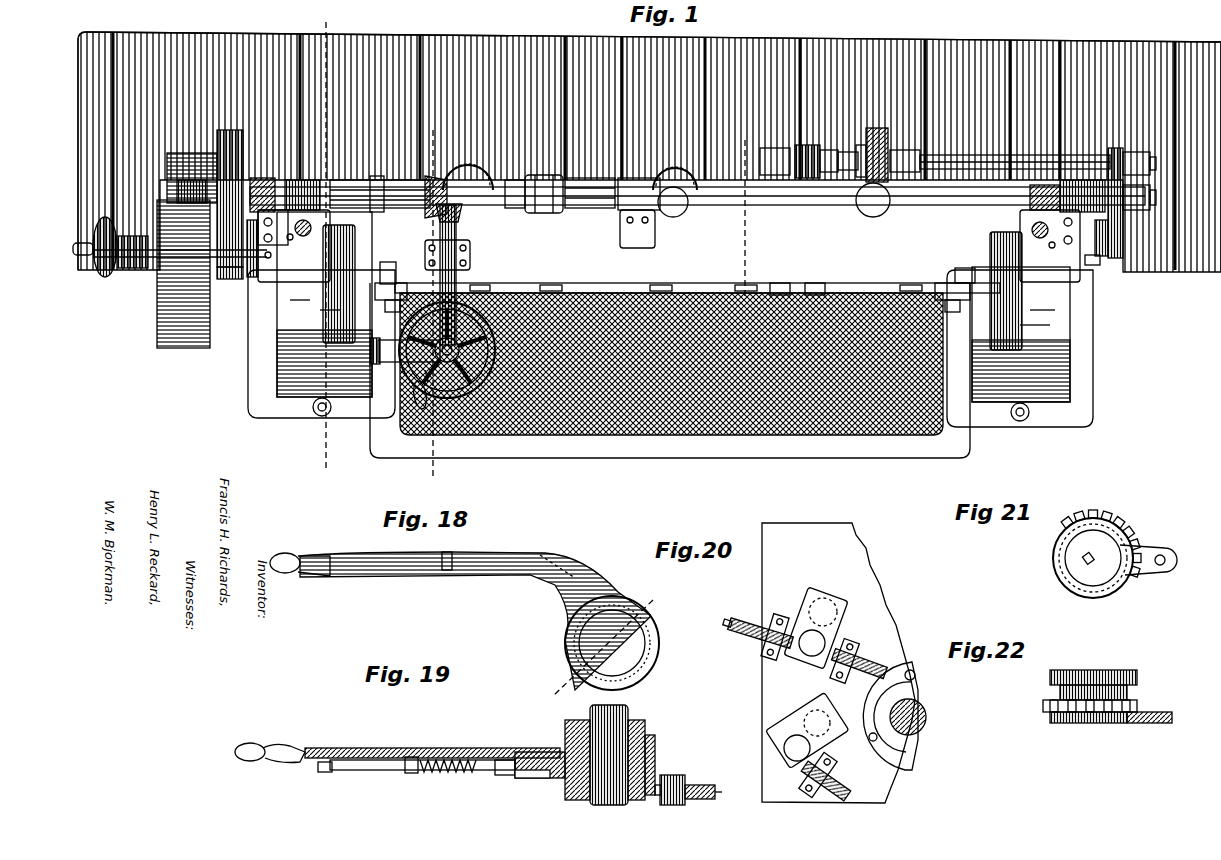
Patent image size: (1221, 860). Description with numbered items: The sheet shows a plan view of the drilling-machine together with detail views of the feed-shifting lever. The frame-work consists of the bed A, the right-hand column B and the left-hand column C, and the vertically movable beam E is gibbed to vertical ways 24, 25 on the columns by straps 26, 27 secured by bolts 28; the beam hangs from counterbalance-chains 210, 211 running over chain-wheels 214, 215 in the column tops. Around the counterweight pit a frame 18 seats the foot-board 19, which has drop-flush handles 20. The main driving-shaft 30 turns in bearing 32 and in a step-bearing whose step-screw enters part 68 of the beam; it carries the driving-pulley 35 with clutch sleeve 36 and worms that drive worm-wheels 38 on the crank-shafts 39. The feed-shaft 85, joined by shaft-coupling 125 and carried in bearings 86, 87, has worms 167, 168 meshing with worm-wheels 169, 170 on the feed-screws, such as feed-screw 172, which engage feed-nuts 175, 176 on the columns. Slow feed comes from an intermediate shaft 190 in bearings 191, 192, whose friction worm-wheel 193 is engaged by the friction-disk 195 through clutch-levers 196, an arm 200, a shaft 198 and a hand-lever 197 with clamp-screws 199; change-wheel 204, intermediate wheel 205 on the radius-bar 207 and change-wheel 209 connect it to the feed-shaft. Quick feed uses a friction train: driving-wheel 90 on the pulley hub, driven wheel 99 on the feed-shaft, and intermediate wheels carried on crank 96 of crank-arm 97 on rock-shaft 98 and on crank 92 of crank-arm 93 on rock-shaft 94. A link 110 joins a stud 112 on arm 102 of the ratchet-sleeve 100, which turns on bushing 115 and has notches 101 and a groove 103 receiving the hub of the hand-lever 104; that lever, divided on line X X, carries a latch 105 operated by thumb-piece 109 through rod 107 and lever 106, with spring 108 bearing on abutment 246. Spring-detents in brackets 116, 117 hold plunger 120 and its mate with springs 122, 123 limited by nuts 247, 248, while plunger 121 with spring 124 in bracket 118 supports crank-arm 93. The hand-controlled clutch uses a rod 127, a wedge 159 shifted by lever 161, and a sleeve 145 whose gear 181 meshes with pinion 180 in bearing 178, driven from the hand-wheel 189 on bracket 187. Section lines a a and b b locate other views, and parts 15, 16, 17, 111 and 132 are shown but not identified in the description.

In FIG. 1, the right frame 15 is at (1066, 418).
In FIG. 1, the left frame 16 is at (266, 412).
In FIG. 1, the screw 17 is at (315, 416).
In FIG. 1, the frame 18 is at (726, 458).
In FIG. 1, the foot-board 19 is at (652, 436).
In FIG. 1, the handles 20 is at (524, 284).
In FIG. 1, the vertical way 24 is at (964, 268).
In FIG. 1, the vertical way 25 is at (384, 262).
In FIG. 1, the strap 26 is at (952, 291).
In FIG. 1, the strap 27 is at (391, 291).
In FIG. 1, the bolts 28 is at (671, 315).
In FIG. 20, the main driving-shaft 30 is at (924, 722).
In FIG. 20, the bearing 32 is at (905, 752).
In FIG. 1, the driving-pulley 35 is at (185, 348).
In FIG. 1, the sleeve 36 is at (143, 268).
In FIG. 1, the worm-wheels 38 is at (470, 164).
In FIG. 1, the crank-shafts 39 is at (678, 216).
In FIG. 1, the part of the beam 68 is at (638, 248).
In FIG. 1, the feed-shaft 85 is at (478, 208).
In FIG. 1, the bearing 86 is at (1082, 180).
In FIG. 1, the bearing 87 is at (264, 178).
In FIG. 1, the frictional driving-wheel 90 is at (222, 279).
In FIG. 20, the crank 92 is at (785, 748).
In FIG. 20, the crank-arm 93 is at (830, 604).
In FIG. 20, the rock-shaft 94 is at (812, 715).
In FIG. 20, the crank 96 is at (808, 648).
In FIG. 20, the crank-arm 97 is at (812, 594).
In FIG. 20, the rock-shaft 98 is at (792, 728).
In FIG. 1, the driven friction-wheel 99 is at (236, 130).
In FIG. 19, the ratchet-sleeve 100 is at (655, 740).
In FIG. 21, the ratchet-sleeve 100 is at (1118, 536).
In FIG. 22, the ratchet-sleeve 100 is at (1116, 670).
In FIG. 21, the notches 101 is at (1048, 560).
In FIG. 22, the notches 101 is at (1135, 708).
In FIG. 19, the arm 102 is at (678, 775).
In FIG. 21, the arm 102 is at (1155, 572).
In FIG. 22, the arm 102 is at (1155, 724).
In FIG. 22, the groove or bearing 103 is at (1060, 690).
In FIG. 1, the hand-lever 104 is at (416, 410).
In FIG. 18, the hand-lever 104 is at (412, 566).
In FIG. 19, the hand-lever 104 is at (390, 748).
In FIG. 19, the sliding bolt 105 is at (540, 752).
In FIG. 19, the intermediate lever 106 is at (505, 760).
In FIG. 19, the rod 107 is at (357, 760).
In FIG. 19, the spring 108 is at (450, 758).
In FIG. 19, the thumb-piece 109 is at (290, 747).
In FIG. 19, the link 110 is at (729, 791).
In FIG. 1, the screw 111 is at (1038, 251).
In FIG. 20, the screw 111 is at (765, 652).
In FIG. 19, the stud 112 is at (700, 790).
In FIG. 19, the bushing 115 is at (636, 722).
In FIG. 20, the bracket 116 is at (748, 626).
In FIG. 20, the bracket 117 is at (888, 664).
In FIG. 20, the bracket 118 is at (850, 786).
In FIG. 20, the plunger 120 is at (850, 642).
In FIG. 20, the spring-actuated plunger 121 is at (806, 770).
In FIG. 20, the spring 122 is at (770, 624).
In FIG. 20, the spring 123 is at (870, 656).
In FIG. 20, the actuating-spring 124 is at (838, 783).
In FIG. 1, the shaft-coupling 125 is at (592, 208).
In FIG. 1, the rod 127 is at (176, 192).
In FIG. 1, the gear 132 is at (212, 152).
In FIG. 1, the sleeve 145 is at (402, 180).
In FIG. 18, the sleeve 145 is at (356, 572).
In FIG. 19, the sleeve 145 is at (322, 772).
In FIG. 1, the wedge 159 is at (520, 180).
In FIG. 1, the wedge-actuating lever 161 is at (545, 214).
In FIG. 1, the worm 167 is at (1045, 189).
In FIG. 1, the worm 168 is at (300, 180).
In FIG. 1, the worm-wheel 169 is at (1050, 246).
In FIG. 1, the worm-wheel 170 is at (294, 246).
In FIG. 1, the feed-screw 172 is at (293, 236).
In FIG. 1, the feed-nut 175 is at (1042, 223).
In FIG. 1, the feed-nut 176 is at (308, 221).
In FIG. 1, the bearing 178 is at (470, 255).
In FIG. 1, the pinion 180 is at (440, 216).
In FIG. 1, the gear 181 is at (428, 206).
In FIG. 1, the bracket 187 is at (405, 351).
In FIG. 1, the hand-wheel 189 is at (468, 400).
In FIG. 1, the intermediate shaft 190 is at (905, 150).
In FIG. 1, the long bearing 191 is at (1022, 155).
In FIG. 1, the bearing 192 is at (772, 148).
In FIG. 1, the worm-wheel 193 is at (877, 128).
In FIG. 1, the friction-disk 195 is at (860, 145).
In FIG. 1, the clutch-levers 196 is at (845, 152).
In FIG. 1, the hand-lever 197 is at (782, 283).
In FIG. 1, the shaft 198 is at (806, 178).
In FIG. 1, the clamp-screws 199 is at (815, 283).
In FIG. 1, the arm 200 is at (826, 150).
In FIG. 1, the change-wheel 204 is at (1114, 148).
In FIG. 1, the intermediate wheel 205 is at (1145, 190).
In FIG. 1, the radius-bar 207 is at (1100, 262).
In FIG. 1, the change-wheel 209 is at (1108, 248).
In FIG. 1, the counterbalance-chain 210 is at (996, 234).
In FIG. 1, the counterbalance-chain 211 is at (350, 236).
In FIG. 1, the chain-wheel 214 is at (1020, 318).
In FIG. 1, the chain-wheel 215 is at (334, 298).
In FIG. 18, the abutment 246 is at (450, 552).
In FIG. 19, the abutment 246 is at (412, 757).
In FIG. 20, the nut 247 is at (730, 632).
In FIG. 20, the nut 248 is at (885, 668).
In FIG. 1, the bed A is at (770, 50).
In FIG. 1, the right-hand column B is at (1093, 372).
In FIG. 1, the left-hand column C is at (228, 379).
In FIG. 1, the movable beam E is at (713, 185).
In FIG. 20, the movable beam E is at (872, 612).
In FIG. 18, the line x x X is at (607, 647).
In FIG. 1, the line a a is at (323, 240).
In FIG. 1, the line b b is at (434, 300).